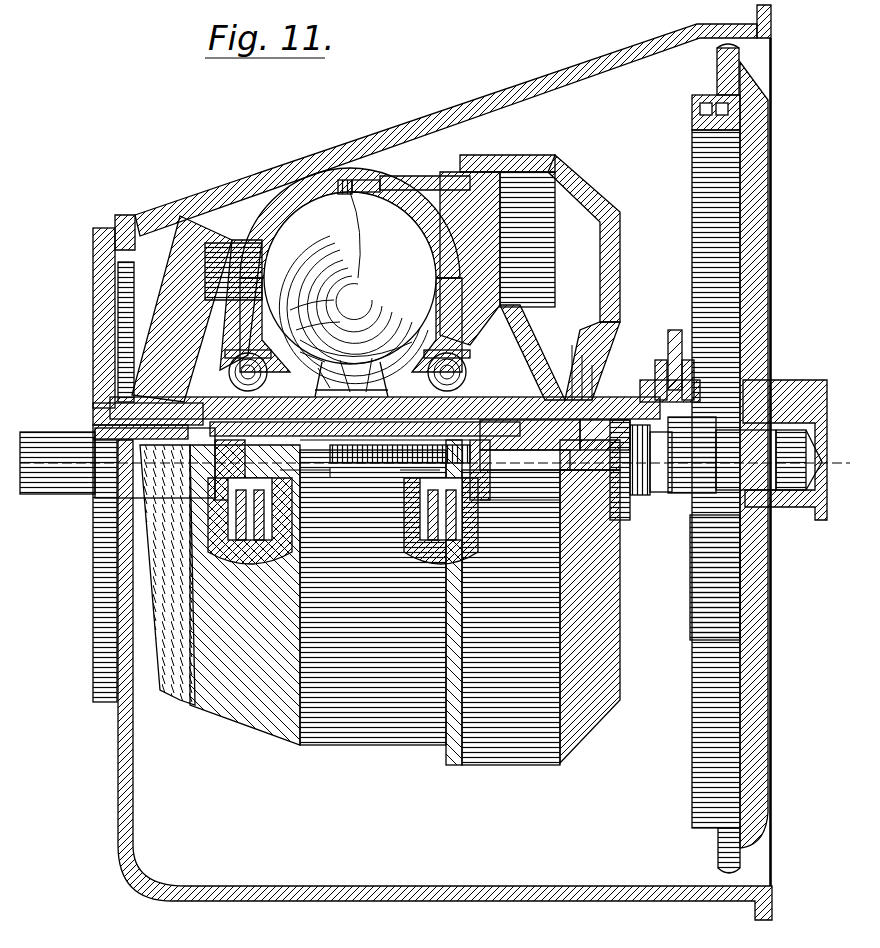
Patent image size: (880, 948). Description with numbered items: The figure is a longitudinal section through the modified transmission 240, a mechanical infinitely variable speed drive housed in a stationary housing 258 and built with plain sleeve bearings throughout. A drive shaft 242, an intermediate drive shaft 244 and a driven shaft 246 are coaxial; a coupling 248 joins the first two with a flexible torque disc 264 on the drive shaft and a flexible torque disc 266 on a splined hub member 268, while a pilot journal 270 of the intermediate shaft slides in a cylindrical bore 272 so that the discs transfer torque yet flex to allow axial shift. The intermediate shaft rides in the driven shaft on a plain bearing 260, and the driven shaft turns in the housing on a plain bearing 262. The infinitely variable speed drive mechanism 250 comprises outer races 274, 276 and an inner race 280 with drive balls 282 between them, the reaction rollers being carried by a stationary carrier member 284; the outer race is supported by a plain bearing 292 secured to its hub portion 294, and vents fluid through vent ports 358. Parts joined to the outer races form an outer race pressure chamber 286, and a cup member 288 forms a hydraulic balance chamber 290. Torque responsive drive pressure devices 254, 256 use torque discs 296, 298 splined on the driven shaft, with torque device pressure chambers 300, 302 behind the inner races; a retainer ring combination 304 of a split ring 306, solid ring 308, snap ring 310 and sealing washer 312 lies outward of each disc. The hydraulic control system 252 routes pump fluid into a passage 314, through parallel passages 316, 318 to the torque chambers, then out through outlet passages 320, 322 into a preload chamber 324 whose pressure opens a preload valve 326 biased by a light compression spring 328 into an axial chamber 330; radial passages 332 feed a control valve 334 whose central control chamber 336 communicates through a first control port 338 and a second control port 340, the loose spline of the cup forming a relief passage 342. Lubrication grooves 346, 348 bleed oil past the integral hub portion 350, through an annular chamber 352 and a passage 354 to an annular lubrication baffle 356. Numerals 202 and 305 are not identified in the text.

The modified transmission 240 is at (389, 116).
The housing 258 is at (560, 64).
The outer race 276 is at (300, 190).
The vent ports 358 is at (342, 180).
The drive balls 282 is at (368, 195).
The outer race 274 is at (418, 178).
The hydraulic balance chamber 290 is at (535, 155).
The cup member 288 is at (580, 180).
The flexible torque disc 266 is at (700, 150).
The flexible torque disc 264 is at (758, 192).
The stationary carrier member 284 is at (222, 283).
The torque responsive drive pressure device 256 is at (222, 300).
The torque disc 298 is at (234, 369).
The inner race 280 is at (292, 300).
The torque device pressure chamber 302 is at (292, 320).
The passage 354 is at (308, 348).
The annular lubrication baffle 356 is at (325, 365).
The hub portion 350 is at (374, 358).
The infinitely variable speed drive mechanism 250 is at (405, 225).
The torque device pressure chamber 300 is at (353, 310).
The torque responsive drive pressure device 254 is at (356, 341).
The outer race pressure chamber 286 is at (560, 232).
The torque disc 296 is at (497, 299).
The solid ring 308 is at (555, 340).
The snap ring 310 is at (602, 330).
The first control port 338 is at (567, 362).
The spring 202 is at (568, 370).
The control valve 334 is at (600, 395).
The relief passage 342 is at (720, 322).
The coupling 248 is at (700, 350).
The splined hub member 268 is at (686, 375).
The radial passages 332 is at (660, 380).
The cylindrical bore 272 is at (793, 380).
The hub portion 294 is at (118, 380).
The plain bearing 292 is at (110, 405).
The plain bearing 262 is at (100, 428).
The parallel passage 318 is at (182, 436).
The driven shaft 246 is at (50, 490).
The passage 314 is at (167, 575).
The lubrication groove 348 is at (240, 458).
The outlet passage 322 is at (320, 378).
The annular chamber 352 is at (305, 460).
The lubrication groove 346 is at (418, 478).
The light compression spring 328 is at (320, 478).
The outlet passage 320 is at (360, 478).
The preload valve 326 is at (298, 500).
The parallel passage 316 is at (410, 470).
The preload chamber 324 is at (295, 515).
The hydraulic control system 252 is at (280, 500).
The sealing washer 312 is at (487, 476).
The retainer ring combination 304 is at (520, 450).
The plate 305 is at (575, 459).
The split ring 306 is at (525, 483).
The plain bearing 260 is at (560, 520).
The central control chamber 336 is at (607, 470).
The second control port 340 is at (612, 461).
The axial chamber 330 is at (623, 474).
The intermediate drive shaft 244 is at (700, 450).
The pilot journal 270 is at (745, 485).
The drive shaft 242 is at (795, 540).